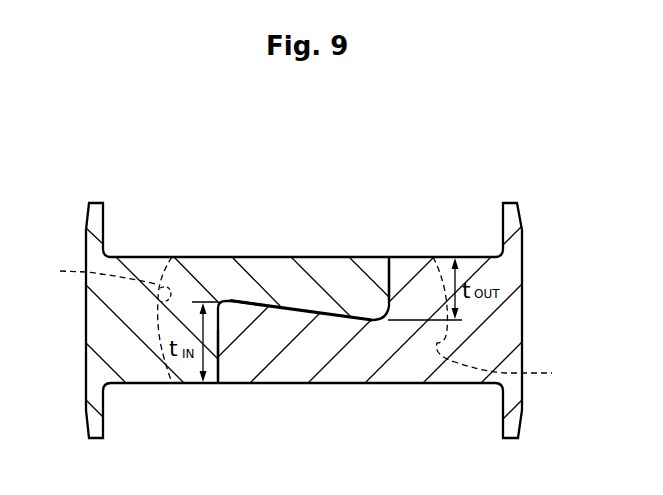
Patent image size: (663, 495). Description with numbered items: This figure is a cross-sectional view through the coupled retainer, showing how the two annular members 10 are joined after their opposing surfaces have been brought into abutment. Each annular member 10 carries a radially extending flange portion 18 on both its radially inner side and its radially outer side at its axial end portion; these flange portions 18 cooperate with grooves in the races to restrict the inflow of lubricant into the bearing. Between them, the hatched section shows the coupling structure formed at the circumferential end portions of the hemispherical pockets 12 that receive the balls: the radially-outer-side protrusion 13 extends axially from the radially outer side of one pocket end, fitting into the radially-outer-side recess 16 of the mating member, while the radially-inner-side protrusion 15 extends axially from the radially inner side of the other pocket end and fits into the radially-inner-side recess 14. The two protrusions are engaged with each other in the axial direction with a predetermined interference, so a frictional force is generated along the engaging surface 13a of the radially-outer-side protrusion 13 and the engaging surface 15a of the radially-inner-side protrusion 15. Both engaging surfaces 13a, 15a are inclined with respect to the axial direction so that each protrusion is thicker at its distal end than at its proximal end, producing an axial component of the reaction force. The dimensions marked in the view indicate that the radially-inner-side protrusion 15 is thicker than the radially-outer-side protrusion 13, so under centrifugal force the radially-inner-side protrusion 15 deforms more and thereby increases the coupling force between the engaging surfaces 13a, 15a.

The annular member 10 is at (86, 333).
The pocket 12 is at (305, 321).
The radially-outer-side protrusion 13 is at (321, 258).
The engaging surface of the radially-outer-side protrusion 13a is at (268, 313).
The radially-inner-side recess 14 is at (218, 340).
The radially-inner-side protrusion 15 is at (293, 363).
The engaging surface of the radially-inner-side protrusion 15a is at (309, 311).
The radially-outer-side recess 16 is at (387, 272).
The flange portion 18 is at (92, 214).